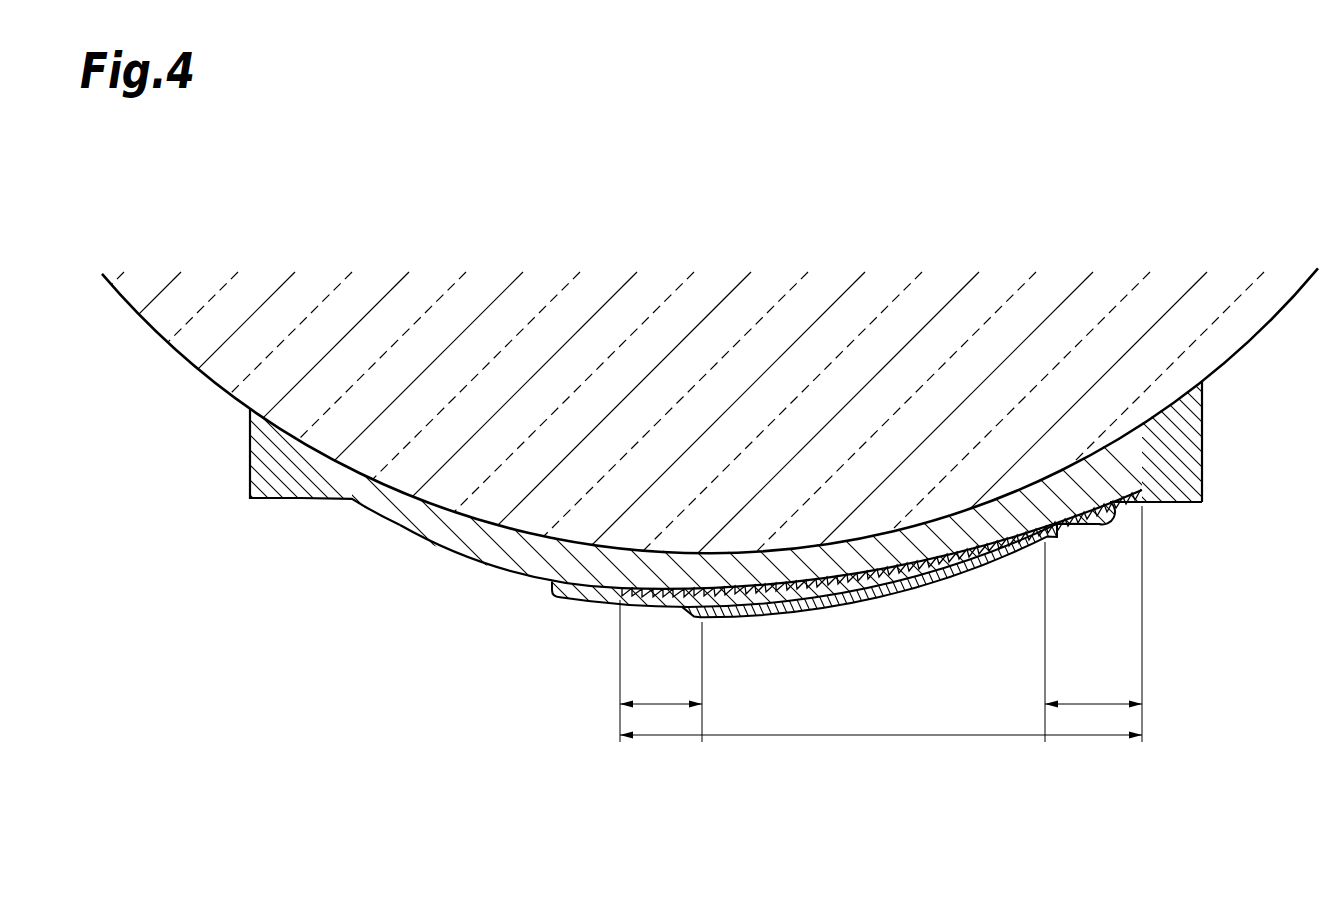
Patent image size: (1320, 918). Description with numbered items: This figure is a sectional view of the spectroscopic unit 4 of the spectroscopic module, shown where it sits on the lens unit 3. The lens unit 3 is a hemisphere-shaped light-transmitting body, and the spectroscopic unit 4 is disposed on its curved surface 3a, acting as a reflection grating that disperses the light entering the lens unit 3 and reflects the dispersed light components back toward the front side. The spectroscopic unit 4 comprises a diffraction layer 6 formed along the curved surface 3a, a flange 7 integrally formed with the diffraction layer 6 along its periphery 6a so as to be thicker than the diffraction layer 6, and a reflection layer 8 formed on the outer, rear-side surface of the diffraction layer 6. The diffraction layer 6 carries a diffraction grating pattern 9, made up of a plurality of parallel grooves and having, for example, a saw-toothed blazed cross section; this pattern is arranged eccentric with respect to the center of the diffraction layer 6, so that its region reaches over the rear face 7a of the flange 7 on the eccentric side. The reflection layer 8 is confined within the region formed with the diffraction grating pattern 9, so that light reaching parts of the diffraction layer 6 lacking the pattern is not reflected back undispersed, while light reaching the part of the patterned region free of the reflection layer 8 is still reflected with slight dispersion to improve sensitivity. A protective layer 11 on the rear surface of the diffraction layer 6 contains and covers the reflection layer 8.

The lens unit 3 is at (163, 312).
The curved surface 3a is at (182, 356).
The spectroscopic unit 4 is at (549, 609).
The diffraction layer 6 is at (392, 507).
The periphery 6a is at (352, 503).
The flange 7 is at (1188, 469).
The rear face 7a is at (1178, 504).
The reflection layer 8 is at (943, 566).
The diffraction grating pattern 9 is at (827, 586).
The protective layer 11 is at (880, 597).